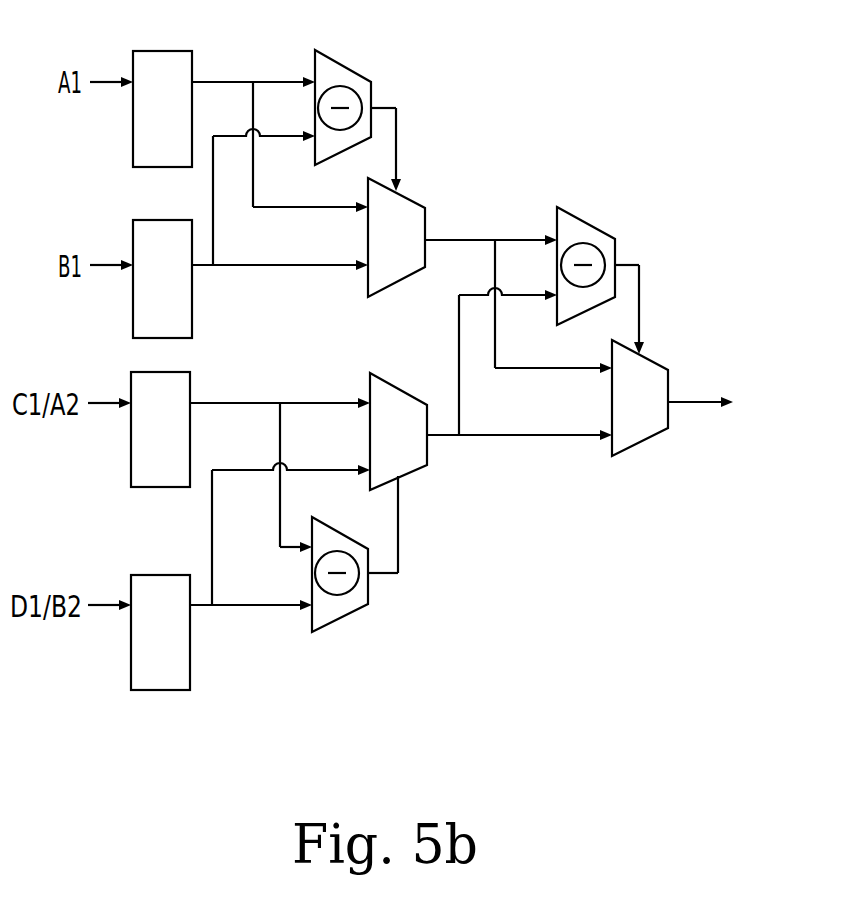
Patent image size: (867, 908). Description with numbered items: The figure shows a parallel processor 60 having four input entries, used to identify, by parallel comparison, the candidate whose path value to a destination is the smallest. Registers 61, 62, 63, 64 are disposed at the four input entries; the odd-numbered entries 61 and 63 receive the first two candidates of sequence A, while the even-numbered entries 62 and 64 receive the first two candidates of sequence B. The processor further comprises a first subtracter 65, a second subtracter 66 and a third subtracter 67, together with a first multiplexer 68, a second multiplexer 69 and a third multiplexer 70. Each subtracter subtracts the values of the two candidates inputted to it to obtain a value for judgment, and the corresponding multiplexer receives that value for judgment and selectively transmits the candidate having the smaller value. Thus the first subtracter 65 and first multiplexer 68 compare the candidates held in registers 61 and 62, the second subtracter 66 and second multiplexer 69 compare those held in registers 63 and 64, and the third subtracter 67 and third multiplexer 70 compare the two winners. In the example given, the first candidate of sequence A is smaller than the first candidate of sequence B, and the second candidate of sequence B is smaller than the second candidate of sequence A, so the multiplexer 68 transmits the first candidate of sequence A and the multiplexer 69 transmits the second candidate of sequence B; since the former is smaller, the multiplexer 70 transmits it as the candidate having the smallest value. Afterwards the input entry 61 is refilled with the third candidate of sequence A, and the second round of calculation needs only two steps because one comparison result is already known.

The parallel processor 60 is at (560, 703).
The register 61 is at (156, 51).
The register 62 is at (156, 220).
The register 63 is at (163, 372).
The register 64 is at (148, 575).
The first subtracter 65 is at (345, 62).
The second subtracter 66 is at (350, 617).
The third subtracter 67 is at (585, 217).
The first multiplexer 68 is at (410, 195).
The second multiplexer 69 is at (400, 385).
The third multiplexer 70 is at (655, 358).